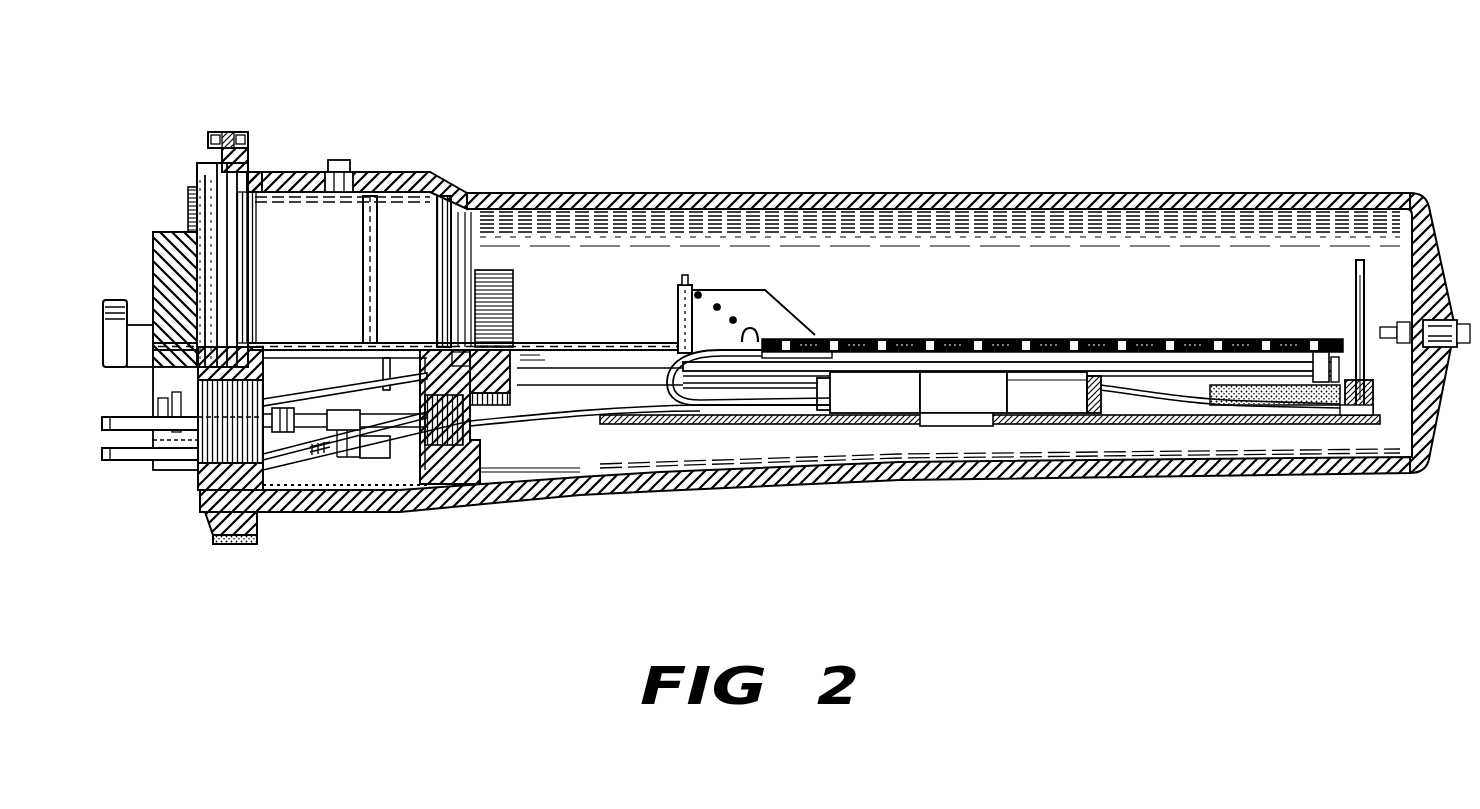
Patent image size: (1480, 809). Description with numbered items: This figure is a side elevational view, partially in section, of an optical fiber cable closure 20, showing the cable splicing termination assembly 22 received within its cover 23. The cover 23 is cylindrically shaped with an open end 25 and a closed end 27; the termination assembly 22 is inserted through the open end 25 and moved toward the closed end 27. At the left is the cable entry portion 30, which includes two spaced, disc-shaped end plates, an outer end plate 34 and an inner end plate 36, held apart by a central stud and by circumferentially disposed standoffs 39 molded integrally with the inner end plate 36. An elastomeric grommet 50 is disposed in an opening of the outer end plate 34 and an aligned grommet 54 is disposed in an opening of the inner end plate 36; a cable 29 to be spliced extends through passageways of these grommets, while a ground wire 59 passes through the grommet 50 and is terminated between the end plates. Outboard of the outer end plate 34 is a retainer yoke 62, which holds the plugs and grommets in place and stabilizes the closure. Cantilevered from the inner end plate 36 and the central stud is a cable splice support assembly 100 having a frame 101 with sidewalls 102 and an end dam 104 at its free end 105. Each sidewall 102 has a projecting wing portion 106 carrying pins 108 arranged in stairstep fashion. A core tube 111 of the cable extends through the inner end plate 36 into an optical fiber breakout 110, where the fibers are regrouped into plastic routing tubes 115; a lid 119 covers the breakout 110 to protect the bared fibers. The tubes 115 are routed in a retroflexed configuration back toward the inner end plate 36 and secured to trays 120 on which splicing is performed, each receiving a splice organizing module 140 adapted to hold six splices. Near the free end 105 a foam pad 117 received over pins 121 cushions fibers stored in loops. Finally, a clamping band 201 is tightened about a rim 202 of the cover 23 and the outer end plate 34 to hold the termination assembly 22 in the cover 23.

The optical fiber cable closure 20 is at (818, 58).
The cable splicing termination assembly 22 is at (997, 243).
The cover 23 is at (810, 197).
The open end 25 is at (268, 166).
The closed end 27 is at (1433, 236).
The cable 29 is at (123, 432).
The cable entry portion 30 is at (133, 297).
The outer end plate 34 is at (197, 178).
The inner end plate 36 is at (410, 190).
The standoff 39 is at (393, 362).
The grommet 50 is at (192, 470).
The grommet 54 is at (485, 470).
The ground wire 59 is at (148, 462).
The retainer yoke 62 is at (188, 205).
The cable splice support assembly 100 is at (1000, 424).
The frame 101 is at (1053, 421).
The sidewall 102 is at (1110, 401).
The end dam 104 is at (1376, 337).
The free end 105 is at (1385, 415).
The projecting wing portion 106 is at (775, 299).
The pin 108 is at (700, 298).
The optical fiber breakout 110 is at (877, 412).
The core tube 111 is at (562, 412).
The routing tube 115 is at (1177, 404).
The foam pad 117 is at (1300, 406).
The lid 119 is at (1013, 367).
The tray 120 is at (830, 333).
The pin 121 is at (1255, 406).
The splice organizing module 140 is at (1150, 333).
The clamping band 201 is at (250, 543).
The rim 202 is at (258, 528).